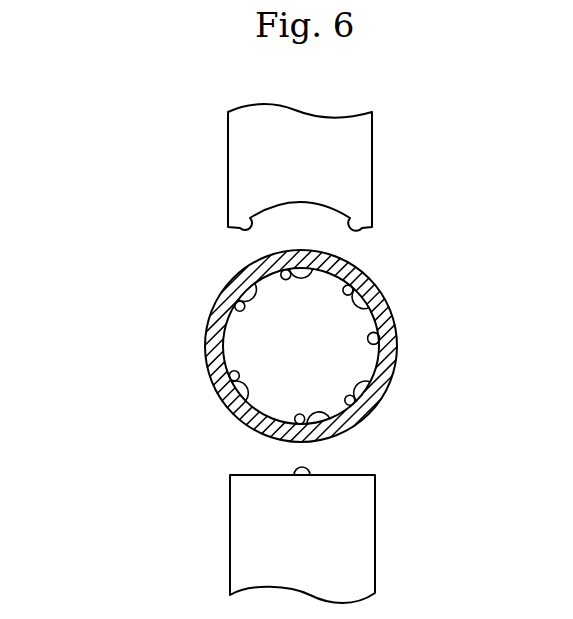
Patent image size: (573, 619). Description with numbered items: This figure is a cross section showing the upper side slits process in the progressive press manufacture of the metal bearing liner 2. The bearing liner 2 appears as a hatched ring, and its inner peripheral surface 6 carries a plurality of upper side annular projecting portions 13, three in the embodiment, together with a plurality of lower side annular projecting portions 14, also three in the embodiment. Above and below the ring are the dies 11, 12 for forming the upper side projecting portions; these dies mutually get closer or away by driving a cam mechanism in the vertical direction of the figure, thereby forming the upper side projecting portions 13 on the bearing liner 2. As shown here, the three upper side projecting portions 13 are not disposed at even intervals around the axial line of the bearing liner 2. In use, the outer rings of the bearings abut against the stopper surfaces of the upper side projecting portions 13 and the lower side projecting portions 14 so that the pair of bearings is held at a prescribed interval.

The metal bearing liner 2 is at (204, 352).
The inner peripheral surface 6 is at (395, 322).
The die for forming the upper side projecting portions 11 is at (355, 155).
The die for forming the upper side projecting portions 12 is at (357, 555).
The upper side annular projecting portion 13 is at (212, 314).
The lower side annular projecting portion 14 is at (246, 281).